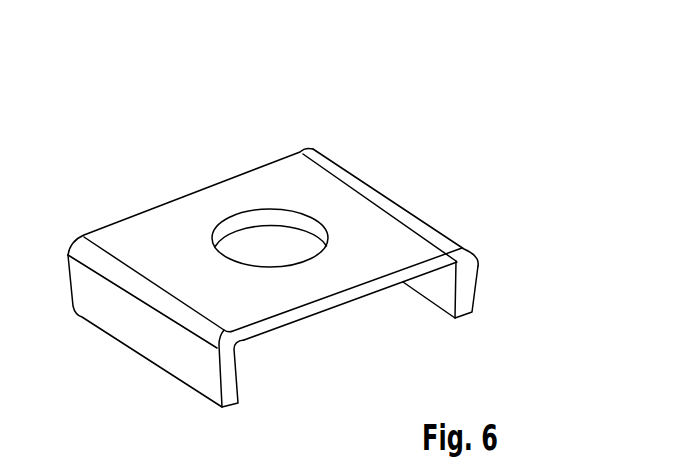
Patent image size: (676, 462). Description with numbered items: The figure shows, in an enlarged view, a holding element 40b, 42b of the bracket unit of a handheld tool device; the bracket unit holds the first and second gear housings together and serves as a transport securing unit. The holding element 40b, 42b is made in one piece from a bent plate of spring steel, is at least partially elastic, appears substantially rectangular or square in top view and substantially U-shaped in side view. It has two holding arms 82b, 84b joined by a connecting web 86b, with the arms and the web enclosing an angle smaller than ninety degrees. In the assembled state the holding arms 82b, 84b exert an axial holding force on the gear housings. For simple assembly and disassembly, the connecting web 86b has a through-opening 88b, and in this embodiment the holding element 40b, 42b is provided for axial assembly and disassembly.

The holding element 40b is at (317, 266).
The holding element 42b is at (317, 266).
The holding arm 82b is at (222, 388).
The holding arm 84b is at (473, 289).
The connecting web 86b is at (140, 236).
The through-opening 88b is at (256, 232).